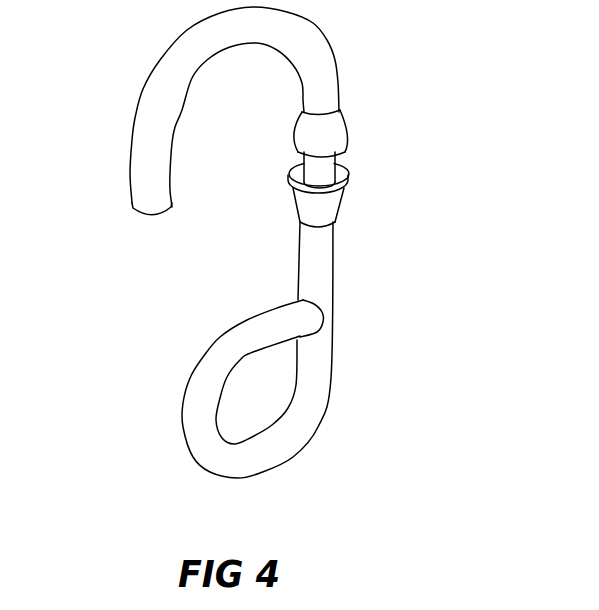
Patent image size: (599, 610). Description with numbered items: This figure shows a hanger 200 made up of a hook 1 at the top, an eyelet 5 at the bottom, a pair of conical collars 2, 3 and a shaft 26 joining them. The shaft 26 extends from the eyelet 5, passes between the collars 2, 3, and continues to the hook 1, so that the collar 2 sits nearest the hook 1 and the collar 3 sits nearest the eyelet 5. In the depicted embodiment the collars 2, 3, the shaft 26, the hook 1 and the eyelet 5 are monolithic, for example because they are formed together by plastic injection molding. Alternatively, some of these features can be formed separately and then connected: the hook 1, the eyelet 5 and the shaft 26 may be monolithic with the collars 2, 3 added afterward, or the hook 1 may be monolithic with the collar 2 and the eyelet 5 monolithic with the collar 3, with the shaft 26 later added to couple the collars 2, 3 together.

The hanger 200 is at (245, 283).
The hook 1 is at (155, 140).
The collar 2 is at (315, 134).
The shaft 26 is at (318, 170).
The collar 3 is at (327, 205).
The eyelet 5 is at (300, 412).